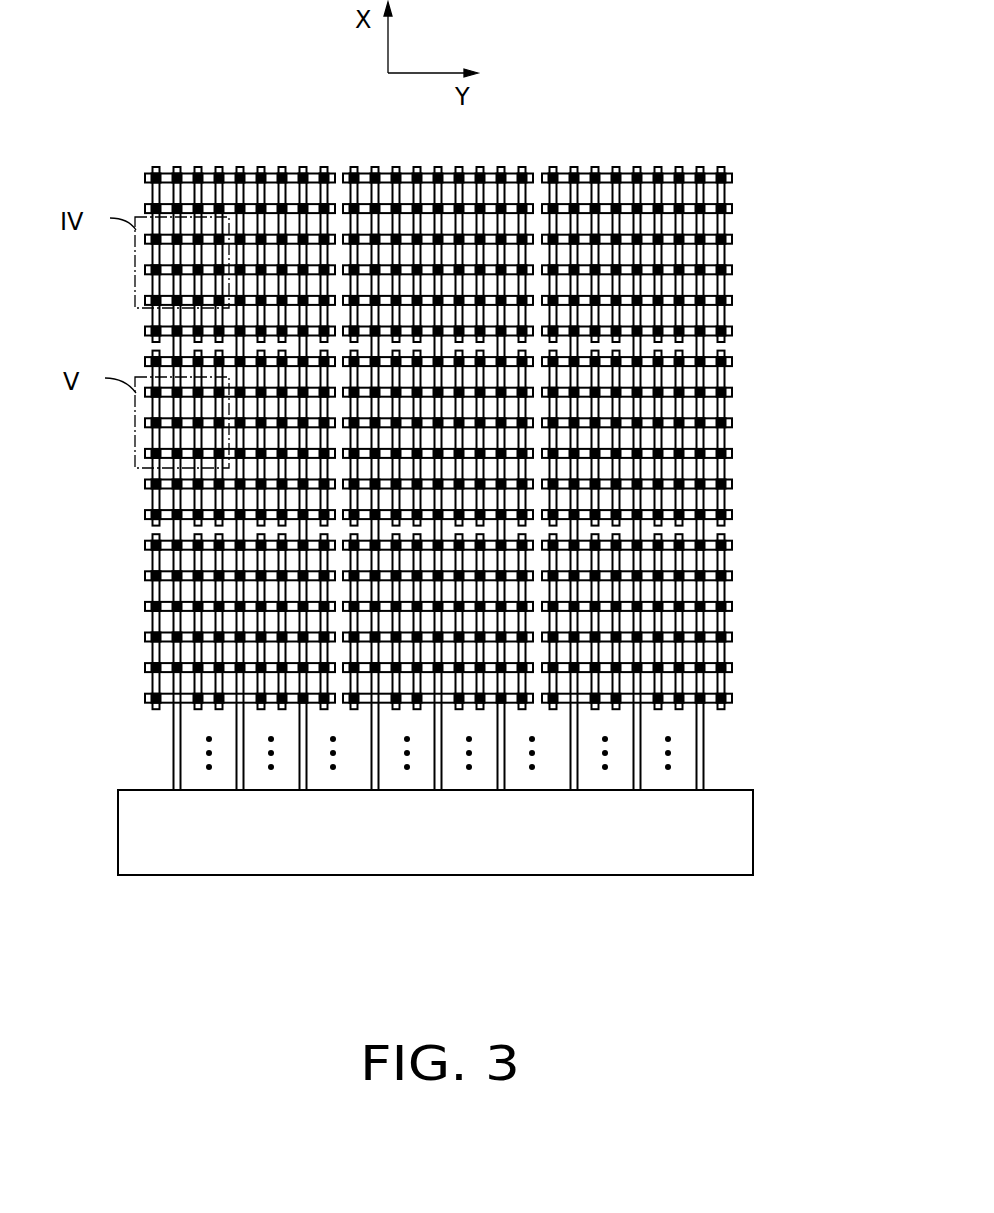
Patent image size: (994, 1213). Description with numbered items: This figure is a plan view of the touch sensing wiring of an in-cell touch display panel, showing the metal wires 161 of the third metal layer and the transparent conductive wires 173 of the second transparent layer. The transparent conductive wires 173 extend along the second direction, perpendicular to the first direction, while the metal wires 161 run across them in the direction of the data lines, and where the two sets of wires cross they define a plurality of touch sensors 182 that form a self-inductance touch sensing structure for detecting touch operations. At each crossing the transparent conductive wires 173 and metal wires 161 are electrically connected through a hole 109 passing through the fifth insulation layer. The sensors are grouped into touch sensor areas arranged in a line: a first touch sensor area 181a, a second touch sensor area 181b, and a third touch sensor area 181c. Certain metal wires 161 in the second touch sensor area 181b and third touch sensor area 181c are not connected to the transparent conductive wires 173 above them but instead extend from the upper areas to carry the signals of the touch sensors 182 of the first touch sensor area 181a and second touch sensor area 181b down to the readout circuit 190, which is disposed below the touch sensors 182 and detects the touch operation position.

The hole 109 is at (152, 697).
The metal wires 161 is at (157, 500).
The transparent conductive wires 173 is at (163, 518).
The first touch sensor area 181a is at (212, 148).
The second touch sensor area 181b is at (127, 448).
The third touch sensor area 181c is at (127, 634).
The touch sensors 182 is at (665, 160).
The readout circuit 190 is at (668, 876).